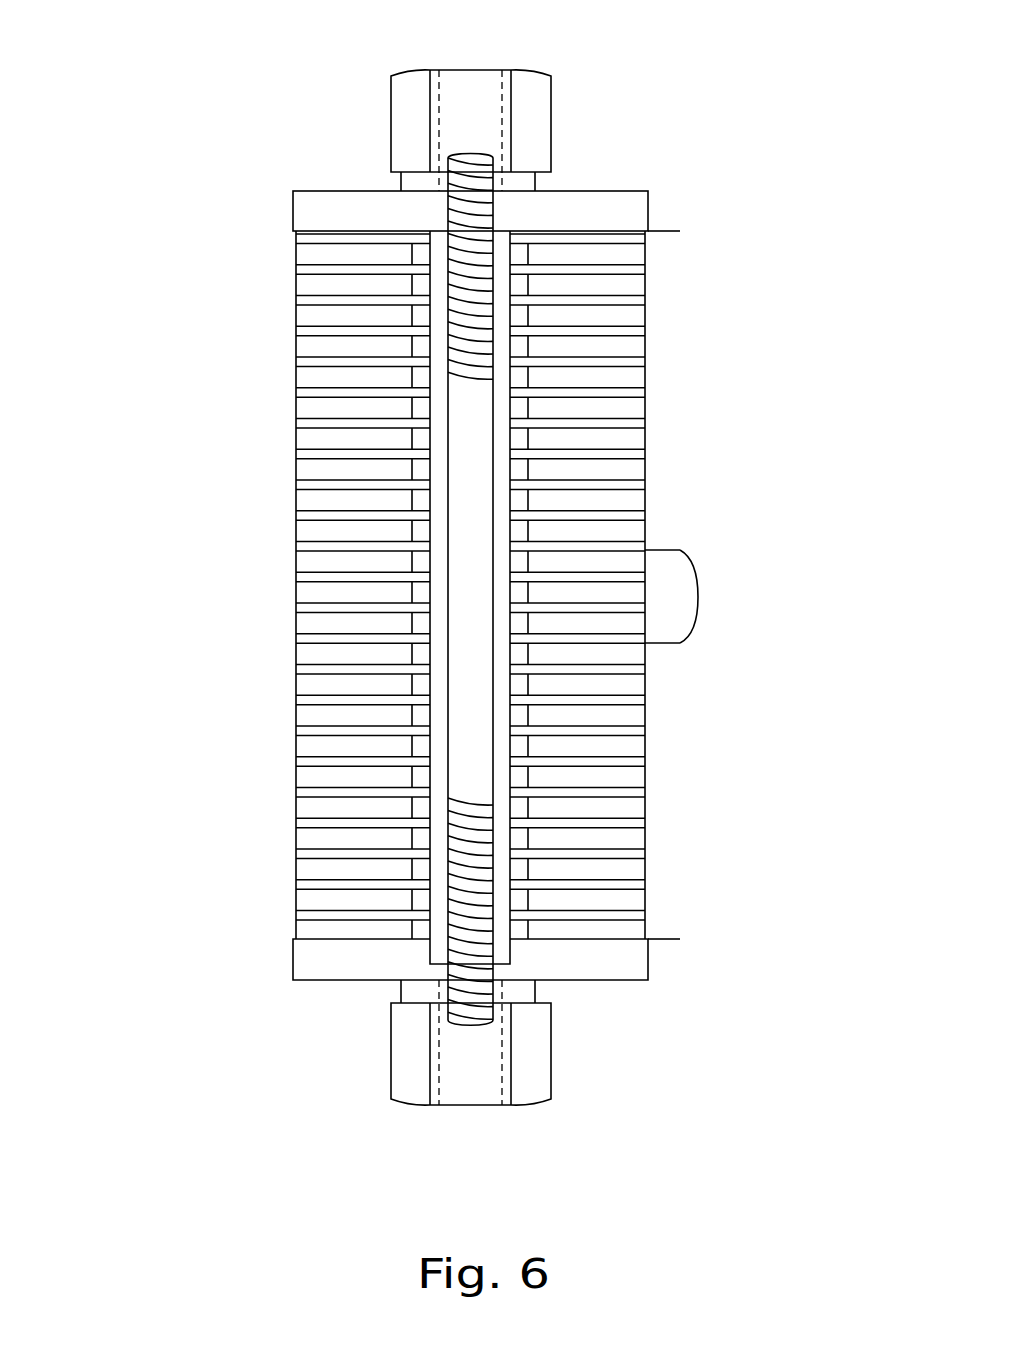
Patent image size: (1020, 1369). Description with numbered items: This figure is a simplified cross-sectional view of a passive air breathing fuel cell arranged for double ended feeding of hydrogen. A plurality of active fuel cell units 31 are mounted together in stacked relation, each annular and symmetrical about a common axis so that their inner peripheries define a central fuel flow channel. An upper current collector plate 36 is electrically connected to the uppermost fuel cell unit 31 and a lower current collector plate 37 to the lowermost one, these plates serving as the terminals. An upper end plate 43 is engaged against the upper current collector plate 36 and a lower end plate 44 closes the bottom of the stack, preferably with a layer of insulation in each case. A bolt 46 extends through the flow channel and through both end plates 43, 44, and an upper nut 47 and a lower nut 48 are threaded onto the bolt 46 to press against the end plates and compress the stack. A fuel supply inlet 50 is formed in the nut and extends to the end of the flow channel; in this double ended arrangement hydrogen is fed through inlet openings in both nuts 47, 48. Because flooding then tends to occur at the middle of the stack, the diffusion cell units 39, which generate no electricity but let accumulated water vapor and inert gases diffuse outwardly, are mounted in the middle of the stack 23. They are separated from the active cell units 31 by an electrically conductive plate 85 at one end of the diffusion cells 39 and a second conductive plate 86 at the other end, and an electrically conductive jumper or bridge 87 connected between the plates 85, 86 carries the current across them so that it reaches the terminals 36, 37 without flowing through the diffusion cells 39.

The plate stack 23 is at (312, 932).
The fuel cell units 31 is at (640, 378).
The upper current collector plate 36 is at (677, 231).
The lower current collector plate 37 is at (665, 952).
The diffusion cell units 39 is at (304, 626).
The upper end plate 43 is at (595, 191).
The lower end plate 44 is at (333, 981).
The bolt 46 is at (463, 457).
The upper nut 47 is at (550, 118).
The lower nut 48 is at (553, 1066).
The fuel supply inlet 50 is at (468, 70).
The electrically conductive plate 85 is at (653, 549).
The electrically conductive plate 86 is at (663, 643).
The electrically conductive jumper or bridge 87 is at (697, 599).